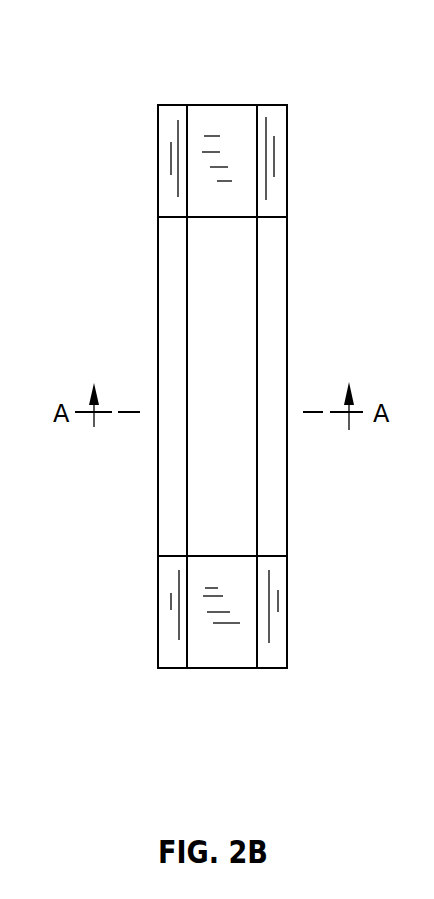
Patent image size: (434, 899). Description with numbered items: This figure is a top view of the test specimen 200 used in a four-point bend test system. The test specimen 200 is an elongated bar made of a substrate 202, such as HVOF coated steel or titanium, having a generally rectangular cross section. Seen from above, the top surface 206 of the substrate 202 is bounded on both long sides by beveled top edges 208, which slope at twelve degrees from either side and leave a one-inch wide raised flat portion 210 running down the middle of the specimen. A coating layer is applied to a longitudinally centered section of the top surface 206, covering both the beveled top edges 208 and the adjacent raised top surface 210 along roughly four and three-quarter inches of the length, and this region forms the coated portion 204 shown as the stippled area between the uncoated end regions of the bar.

The test specimen 200 is at (250, 85).
The substrate 202 is at (272, 162).
The coated portion 204 is at (268, 293).
The top surface 206 is at (215, 277).
The beveled top edges 208 is at (173, 507).
The raised top surface 210 is at (237, 396).